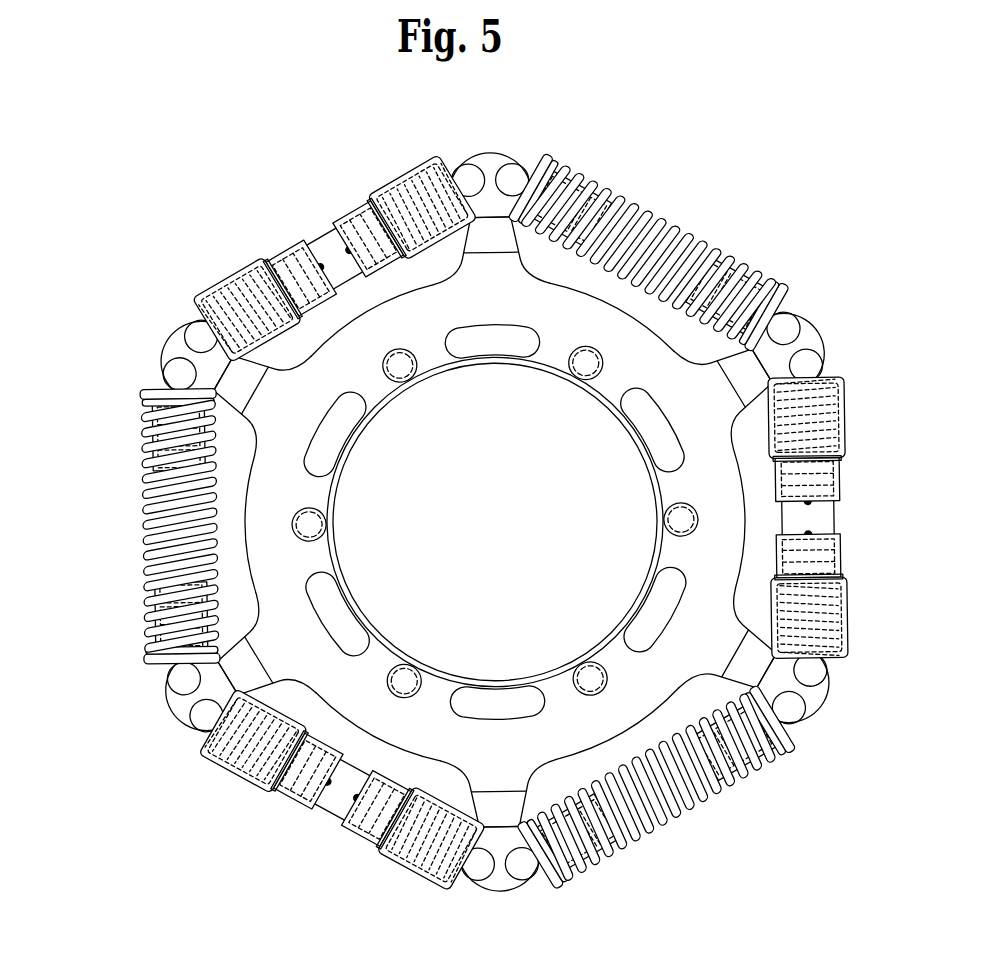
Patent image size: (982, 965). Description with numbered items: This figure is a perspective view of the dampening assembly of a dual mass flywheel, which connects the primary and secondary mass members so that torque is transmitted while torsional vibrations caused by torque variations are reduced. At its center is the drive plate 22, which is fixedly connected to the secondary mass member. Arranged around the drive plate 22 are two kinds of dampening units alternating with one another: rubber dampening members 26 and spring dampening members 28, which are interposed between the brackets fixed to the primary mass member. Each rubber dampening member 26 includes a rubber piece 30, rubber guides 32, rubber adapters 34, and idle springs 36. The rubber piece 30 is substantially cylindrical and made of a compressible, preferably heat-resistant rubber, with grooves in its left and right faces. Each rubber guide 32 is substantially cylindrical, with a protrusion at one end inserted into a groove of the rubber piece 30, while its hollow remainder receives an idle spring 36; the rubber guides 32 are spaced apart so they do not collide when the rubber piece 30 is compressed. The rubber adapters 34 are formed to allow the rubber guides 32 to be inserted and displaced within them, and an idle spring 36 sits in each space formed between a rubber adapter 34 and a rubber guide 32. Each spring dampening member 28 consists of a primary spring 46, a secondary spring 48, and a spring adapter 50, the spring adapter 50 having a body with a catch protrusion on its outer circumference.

The drive plate 22 is at (727, 512).
The rubber dampening member 26 is at (322, 549).
The spring dampening member 28 is at (121, 579).
The rubber piece 30 is at (330, 812).
The rubber guide 32 is at (303, 807).
The rubber adapter 34 is at (203, 750).
The idle spring 36 is at (262, 793).
The primary spring 46 is at (705, 798).
The secondary spring 48 is at (665, 807).
The spring adapter 50 is at (790, 745).